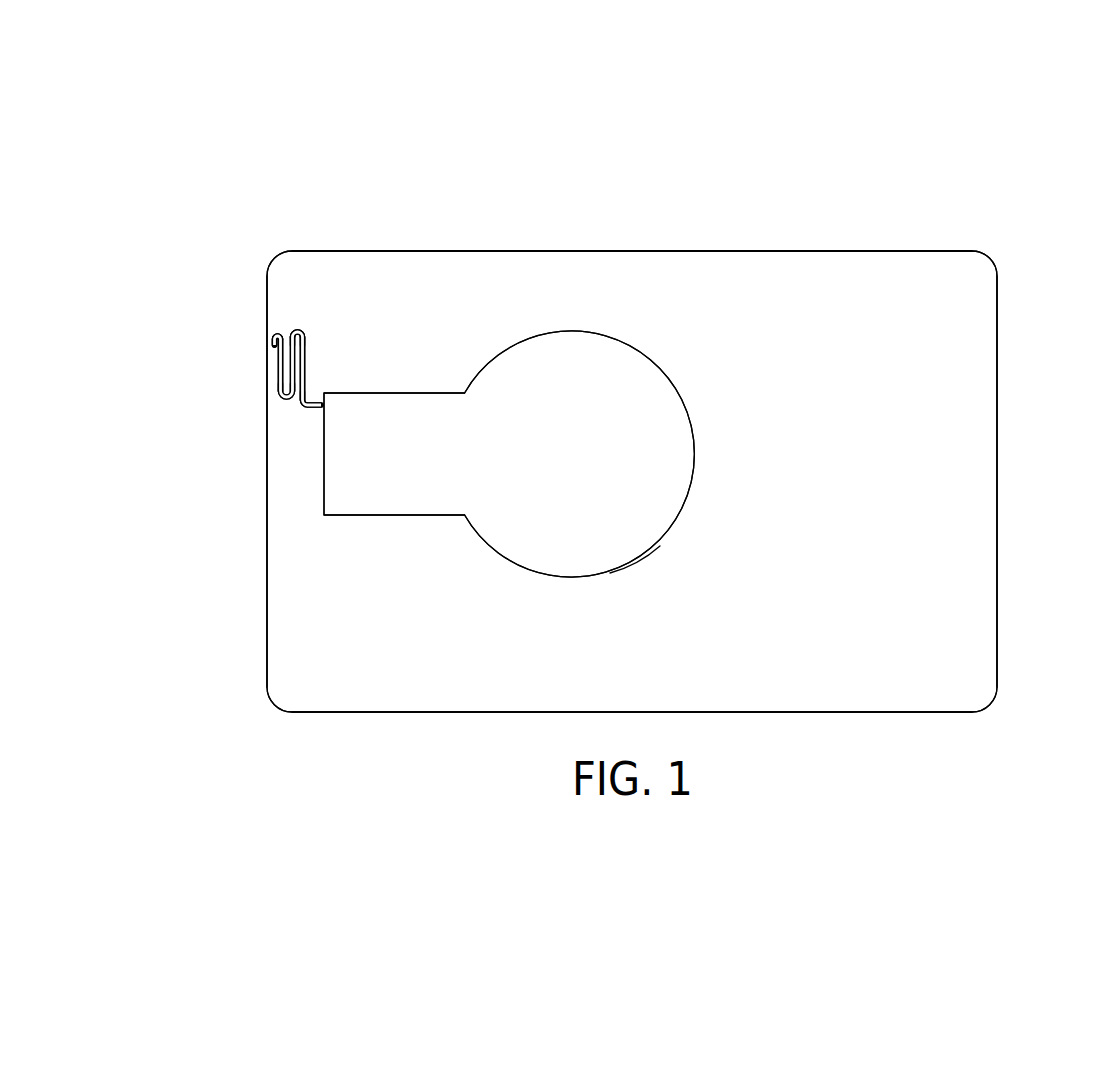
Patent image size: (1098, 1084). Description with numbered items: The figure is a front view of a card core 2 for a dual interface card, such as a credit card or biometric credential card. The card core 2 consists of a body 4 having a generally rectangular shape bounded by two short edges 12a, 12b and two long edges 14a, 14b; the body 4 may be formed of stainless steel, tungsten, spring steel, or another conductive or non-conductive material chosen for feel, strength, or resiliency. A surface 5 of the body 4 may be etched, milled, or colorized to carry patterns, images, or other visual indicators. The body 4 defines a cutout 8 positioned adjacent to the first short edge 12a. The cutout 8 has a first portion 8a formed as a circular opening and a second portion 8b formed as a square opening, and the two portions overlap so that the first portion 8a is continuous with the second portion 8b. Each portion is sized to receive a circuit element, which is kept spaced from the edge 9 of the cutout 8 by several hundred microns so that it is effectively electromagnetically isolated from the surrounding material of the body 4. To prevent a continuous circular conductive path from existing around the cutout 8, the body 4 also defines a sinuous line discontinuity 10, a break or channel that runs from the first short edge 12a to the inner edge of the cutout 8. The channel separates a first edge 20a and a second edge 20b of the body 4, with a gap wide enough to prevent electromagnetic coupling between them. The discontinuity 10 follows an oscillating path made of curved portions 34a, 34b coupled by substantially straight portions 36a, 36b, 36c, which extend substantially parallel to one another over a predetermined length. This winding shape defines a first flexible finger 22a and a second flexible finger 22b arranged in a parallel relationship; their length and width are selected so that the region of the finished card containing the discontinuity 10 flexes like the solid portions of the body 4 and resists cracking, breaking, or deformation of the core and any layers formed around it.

The card core 2 is at (817, 139).
The body 4 is at (455, 251).
The surface 5 is at (837, 471).
The cutout 8 is at (562, 329).
The first portion 8a is at (598, 358).
The second portion 8b is at (342, 449).
The edge of the cutout 9 is at (640, 553).
The sinuous line discontinuity 10 is at (257, 385).
The first short edge 12a is at (266, 555).
The second short edge 12b is at (997, 405).
The first long edge 14a is at (725, 250).
The second long edge 14b is at (898, 712).
The first edge 20a is at (307, 333).
The second edge 20b is at (272, 342).
The first flexible finger 22a is at (302, 405).
The second flexible finger 22b is at (270, 334).
The curved portion 34a is at (303, 333).
The curved portion 34b is at (285, 398).
The substantially straight portion 36a is at (308, 356).
The substantially straight portion 36b is at (284, 333).
The substantially straight portion 36c is at (278, 364).